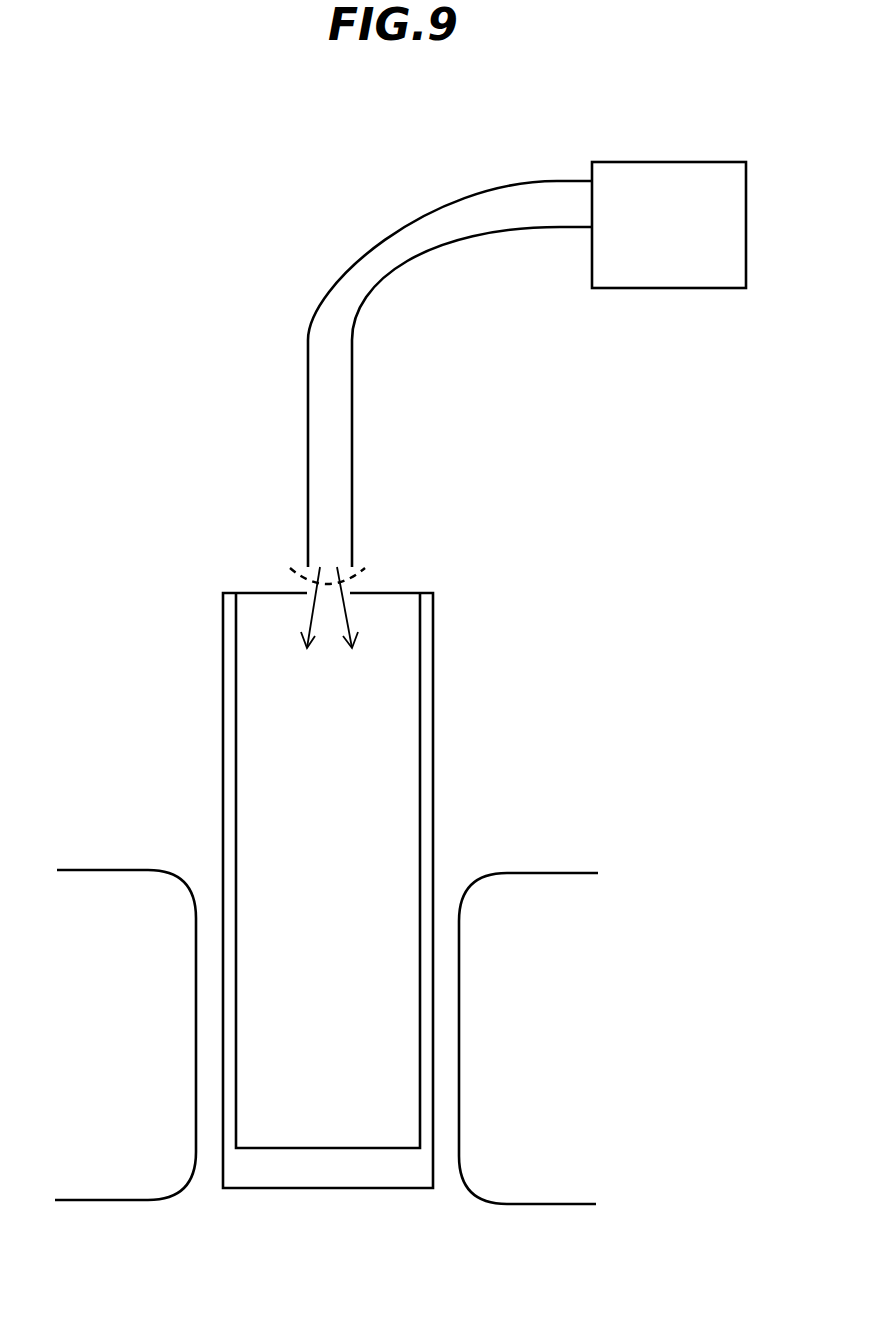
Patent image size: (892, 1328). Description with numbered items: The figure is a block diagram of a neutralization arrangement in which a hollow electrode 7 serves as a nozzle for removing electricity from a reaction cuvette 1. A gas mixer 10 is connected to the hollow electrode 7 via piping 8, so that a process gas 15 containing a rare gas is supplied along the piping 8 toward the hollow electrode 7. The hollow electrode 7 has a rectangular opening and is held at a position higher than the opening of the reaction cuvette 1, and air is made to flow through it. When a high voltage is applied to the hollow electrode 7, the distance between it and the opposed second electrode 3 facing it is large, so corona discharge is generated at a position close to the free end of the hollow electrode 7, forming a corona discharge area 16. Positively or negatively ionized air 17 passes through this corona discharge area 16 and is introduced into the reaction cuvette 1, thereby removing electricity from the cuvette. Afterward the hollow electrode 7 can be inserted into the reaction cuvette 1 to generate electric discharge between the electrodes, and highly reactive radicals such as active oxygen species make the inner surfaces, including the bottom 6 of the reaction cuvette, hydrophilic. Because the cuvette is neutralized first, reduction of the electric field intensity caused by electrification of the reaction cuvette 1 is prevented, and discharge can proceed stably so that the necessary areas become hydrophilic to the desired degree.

The reaction cuvette 1 is at (433, 905).
The second electrode 3 is at (105, 1203).
The bottom of the reaction cuvette 6 is at (270, 1148).
The hollow electrode 7 is at (307, 365).
The piping 8 is at (405, 226).
The gas mixer 10 is at (672, 289).
The process gas 15 is at (556, 203).
The corona discharge area 16 is at (358, 569).
The ionized air 17 is at (322, 625).